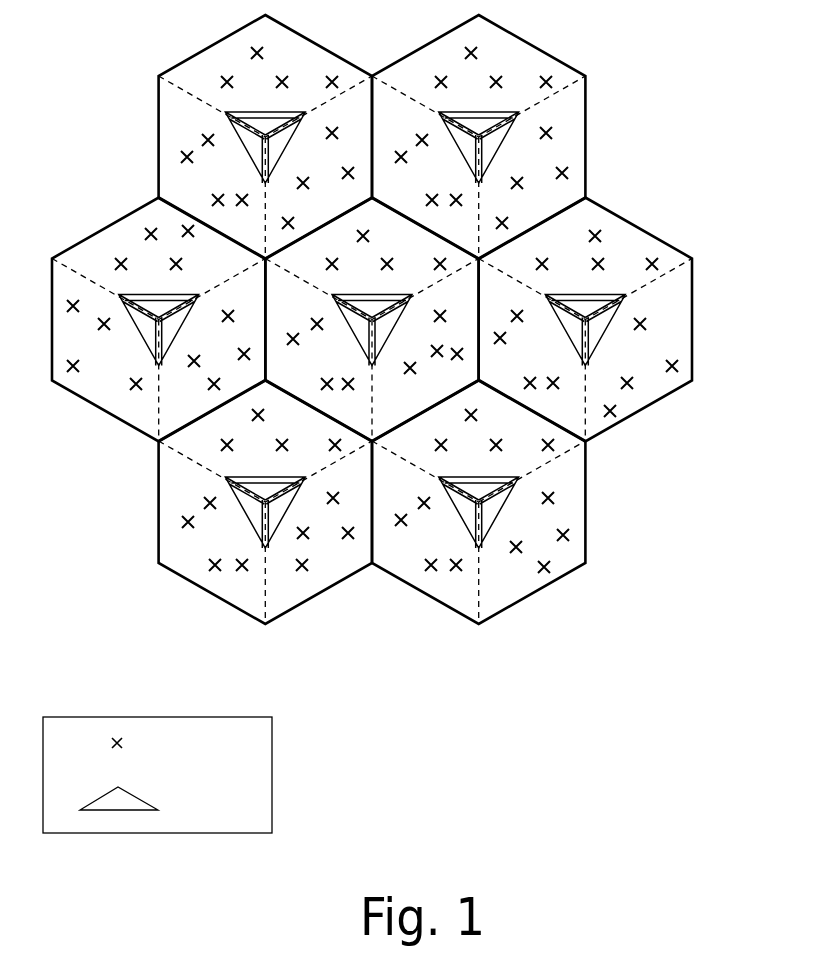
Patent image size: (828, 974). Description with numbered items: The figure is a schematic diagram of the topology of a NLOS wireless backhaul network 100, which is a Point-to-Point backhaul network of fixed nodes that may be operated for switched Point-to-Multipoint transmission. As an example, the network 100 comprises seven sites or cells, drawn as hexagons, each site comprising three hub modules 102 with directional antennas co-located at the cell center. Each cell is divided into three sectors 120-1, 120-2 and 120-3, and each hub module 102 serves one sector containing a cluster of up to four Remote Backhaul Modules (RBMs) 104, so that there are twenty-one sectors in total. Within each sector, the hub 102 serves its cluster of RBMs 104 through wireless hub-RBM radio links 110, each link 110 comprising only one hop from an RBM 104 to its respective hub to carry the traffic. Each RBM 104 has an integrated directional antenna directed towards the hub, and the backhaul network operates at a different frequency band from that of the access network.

The wireless backhaul network 100 is at (135, 23).
The hub module 102 is at (242, 803).
The Remote Backhaul Module (RBM) 104 is at (278, 517).
The hub-RBM radio link 110 is at (232, 533).
The first sector 120-1 is at (518, 427).
The second sector 120-2 is at (467, 587).
The third sector 120-3 is at (558, 562).